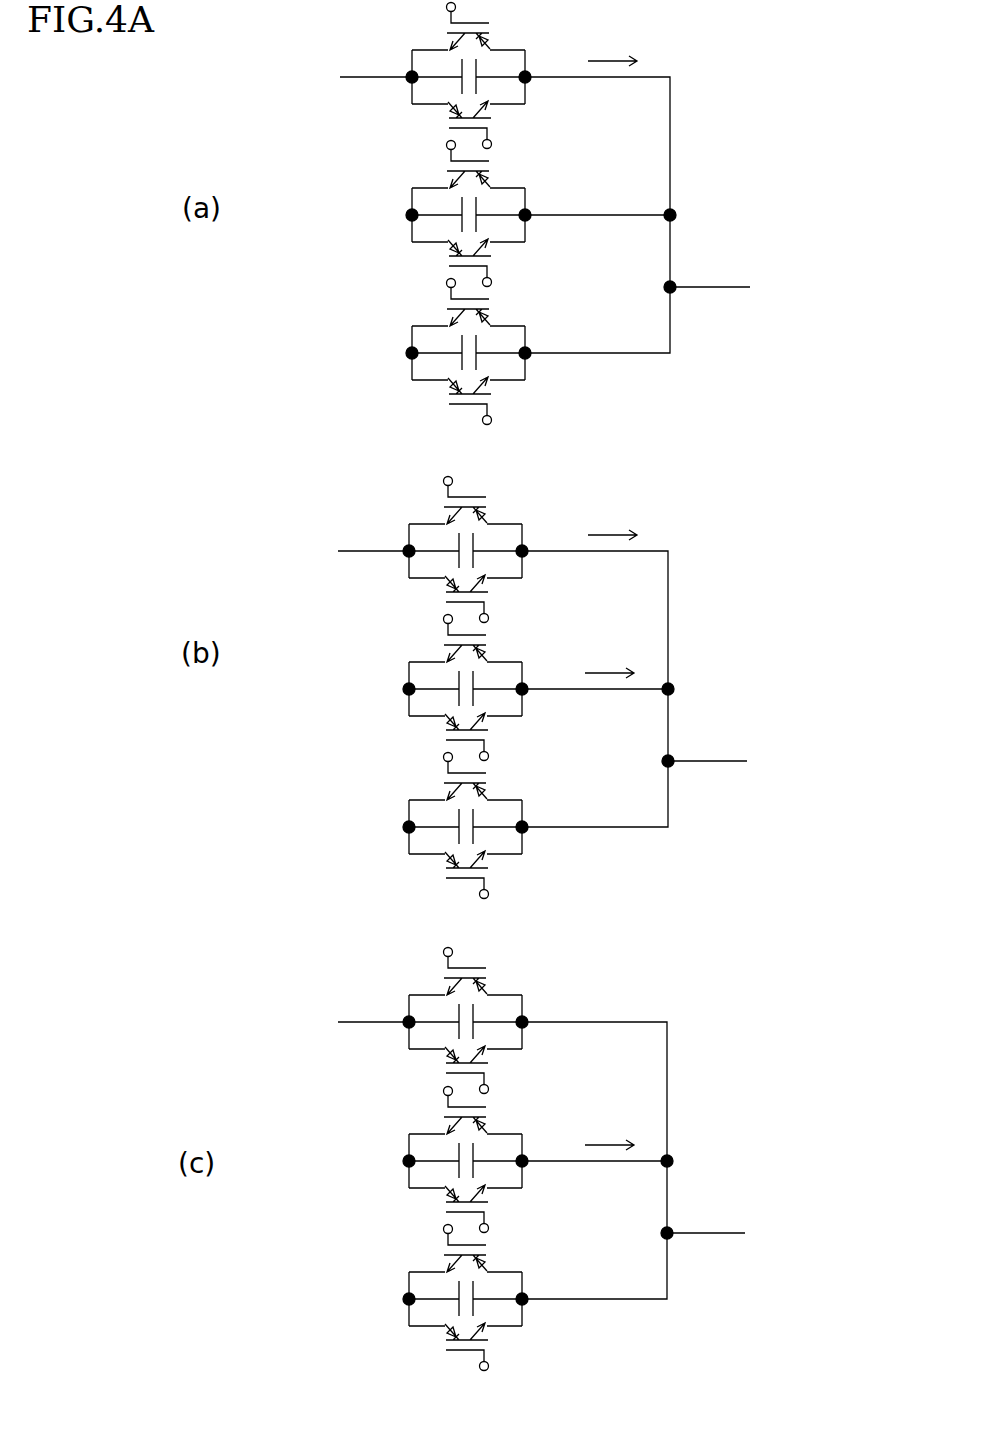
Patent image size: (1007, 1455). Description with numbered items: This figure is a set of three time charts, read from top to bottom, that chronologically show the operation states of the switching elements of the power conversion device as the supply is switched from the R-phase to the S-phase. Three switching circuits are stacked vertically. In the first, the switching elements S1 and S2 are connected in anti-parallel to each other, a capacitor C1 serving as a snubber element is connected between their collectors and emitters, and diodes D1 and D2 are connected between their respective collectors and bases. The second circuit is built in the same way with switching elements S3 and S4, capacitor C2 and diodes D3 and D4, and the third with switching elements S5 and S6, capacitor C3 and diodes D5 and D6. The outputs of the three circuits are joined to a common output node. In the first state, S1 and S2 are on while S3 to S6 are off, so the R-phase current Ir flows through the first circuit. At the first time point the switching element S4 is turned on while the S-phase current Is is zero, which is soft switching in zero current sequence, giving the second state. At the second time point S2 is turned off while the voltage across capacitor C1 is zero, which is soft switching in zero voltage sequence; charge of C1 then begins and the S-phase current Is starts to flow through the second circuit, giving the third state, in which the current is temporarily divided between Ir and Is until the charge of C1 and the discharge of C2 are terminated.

The capacitor C1 is at (467, 549).
The capacitor C2 is at (467, 688).
The capacitor C3 is at (467, 826).
The switching element S1 is at (424, 499).
The switching element S2 is at (509, 597).
The switching element S3 is at (422, 638).
The switching element S4 is at (510, 736).
The switching element S5 is at (422, 776).
The switching element S6 is at (510, 874).
The diode D1 is at (496, 509).
The diode D2 is at (439, 590).
The diode D3 is at (496, 647).
The diode D4 is at (439, 728).
The diode D5 is at (496, 785).
The diode D6 is at (439, 866).
The R-phase current Ir is at (612, 285).
The S-phase current Is is at (609, 896).